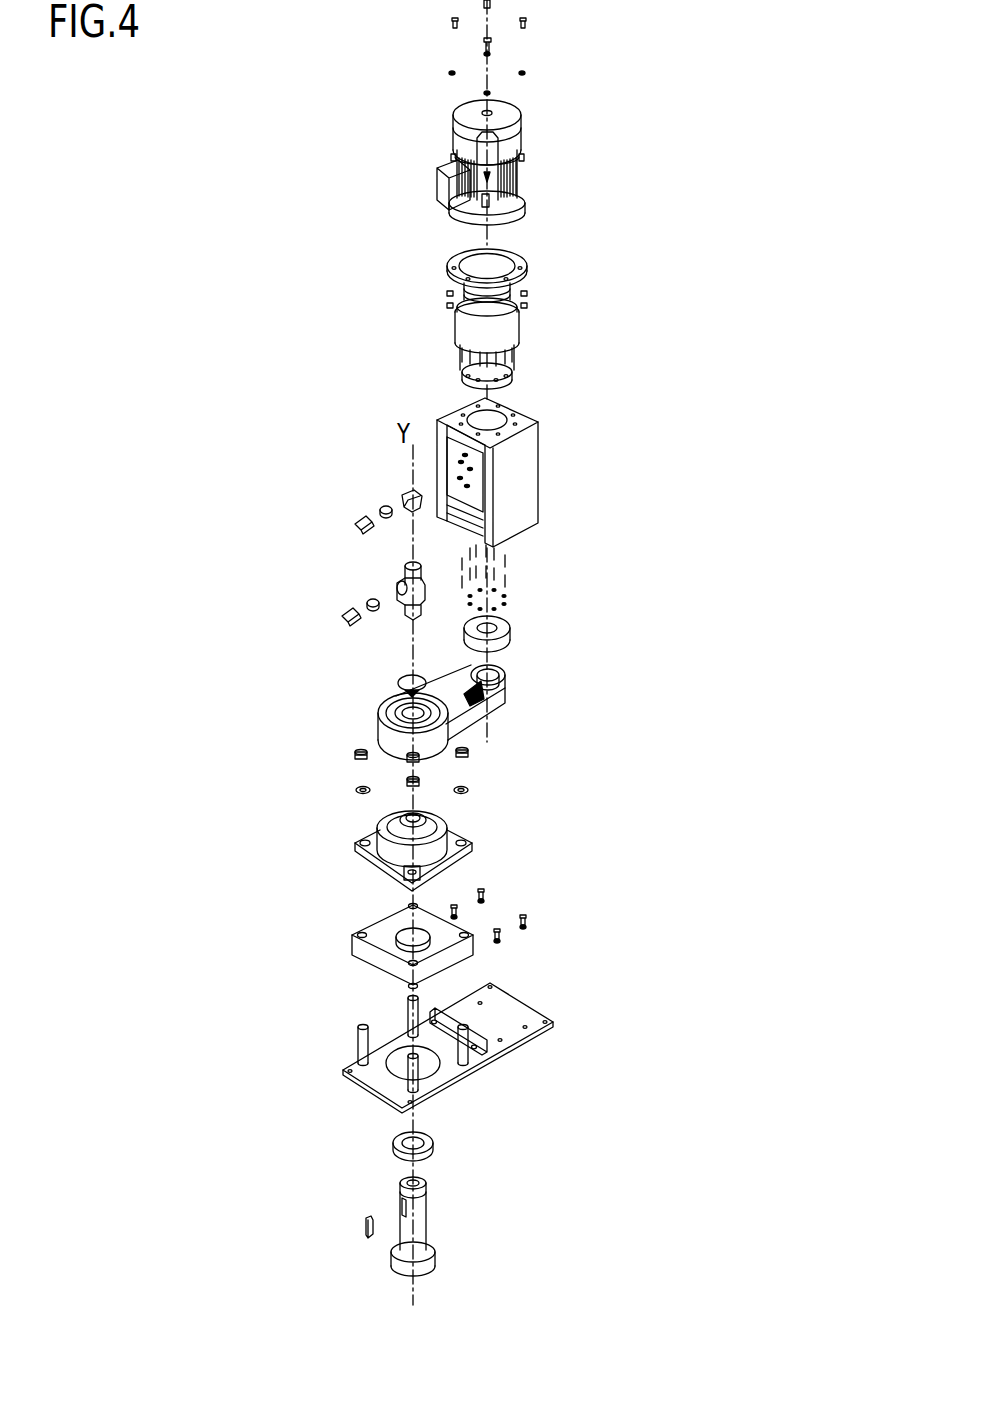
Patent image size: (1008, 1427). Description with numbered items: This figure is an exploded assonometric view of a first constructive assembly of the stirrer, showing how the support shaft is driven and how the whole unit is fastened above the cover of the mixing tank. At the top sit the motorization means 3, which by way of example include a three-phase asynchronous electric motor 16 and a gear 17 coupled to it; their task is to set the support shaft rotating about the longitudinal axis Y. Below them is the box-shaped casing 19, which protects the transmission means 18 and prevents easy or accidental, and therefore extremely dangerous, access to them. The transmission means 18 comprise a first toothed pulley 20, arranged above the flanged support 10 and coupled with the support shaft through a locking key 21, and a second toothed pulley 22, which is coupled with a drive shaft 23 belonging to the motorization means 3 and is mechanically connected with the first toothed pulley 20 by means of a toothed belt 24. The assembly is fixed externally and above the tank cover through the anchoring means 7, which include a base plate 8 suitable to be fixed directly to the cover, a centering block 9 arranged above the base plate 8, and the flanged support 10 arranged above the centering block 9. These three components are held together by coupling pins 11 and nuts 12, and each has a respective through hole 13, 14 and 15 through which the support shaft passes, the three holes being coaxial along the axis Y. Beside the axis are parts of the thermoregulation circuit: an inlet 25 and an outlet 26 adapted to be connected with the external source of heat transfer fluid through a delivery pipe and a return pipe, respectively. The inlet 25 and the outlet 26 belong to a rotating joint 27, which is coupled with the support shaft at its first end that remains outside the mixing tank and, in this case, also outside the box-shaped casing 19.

The motorization means 3 is at (400, 218).
The anchoring means 7 is at (545, 995).
The base plate 8 is at (375, 1077).
The centering block 9 is at (385, 928).
The flanged support 10 is at (390, 857).
The coupling pins 11 is at (355, 1044).
The nuts 12 is at (350, 758).
The through hole 13 is at (394, 1078).
The through hole 14 is at (398, 942).
The through hole 15 is at (403, 816).
The three-phase asynchronous electric motor 16 is at (513, 143).
The gear 17 is at (505, 327).
The transmission means 18 is at (512, 720).
The box-shaped casing 19 is at (511, 478).
The first toothed pulley 20 is at (382, 698).
The locking key 21 is at (363, 1230).
The second toothed pulley 22 is at (504, 662).
The drive shaft 23 is at (510, 643).
The toothed belt 24 is at (380, 738).
The inlet 25 is at (337, 626).
The outlet 26 is at (346, 515).
The rotating joint 27 is at (400, 570).